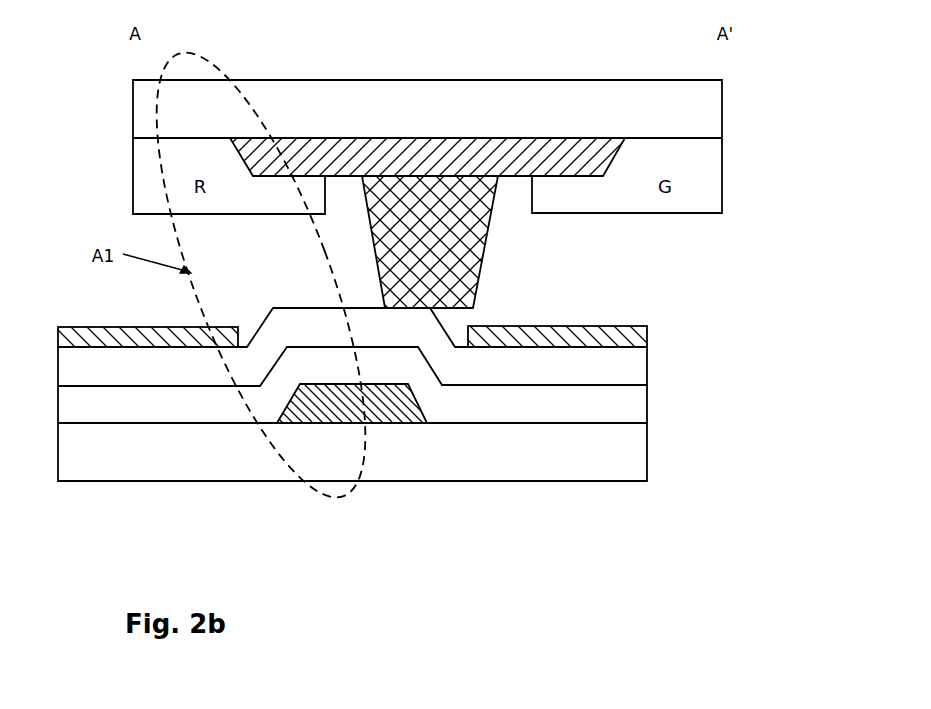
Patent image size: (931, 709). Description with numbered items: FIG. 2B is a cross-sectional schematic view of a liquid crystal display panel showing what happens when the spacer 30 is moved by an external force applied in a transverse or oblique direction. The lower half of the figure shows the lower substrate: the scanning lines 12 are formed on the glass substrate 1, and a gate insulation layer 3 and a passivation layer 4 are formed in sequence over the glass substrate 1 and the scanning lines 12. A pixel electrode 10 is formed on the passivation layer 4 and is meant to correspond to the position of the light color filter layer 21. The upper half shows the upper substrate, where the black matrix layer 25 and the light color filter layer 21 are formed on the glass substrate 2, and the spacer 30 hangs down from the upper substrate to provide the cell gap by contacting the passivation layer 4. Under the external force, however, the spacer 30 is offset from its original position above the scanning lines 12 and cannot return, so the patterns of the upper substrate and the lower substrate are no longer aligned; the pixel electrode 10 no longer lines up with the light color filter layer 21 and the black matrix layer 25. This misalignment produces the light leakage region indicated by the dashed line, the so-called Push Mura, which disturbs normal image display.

The glass substrate of the lower substrate 1 is at (620, 446).
The glass substrate of the upper substrate 2 is at (695, 101).
The gate insulation layer 3 is at (620, 404).
The passivation layer 4 is at (620, 366).
The pixel electrode 10 is at (80, 327).
The scanning lines 12 is at (343, 424).
The light color filter layer 21 is at (700, 173).
The black matrix layer 25 is at (420, 138).
The spacer 30 is at (487, 256).